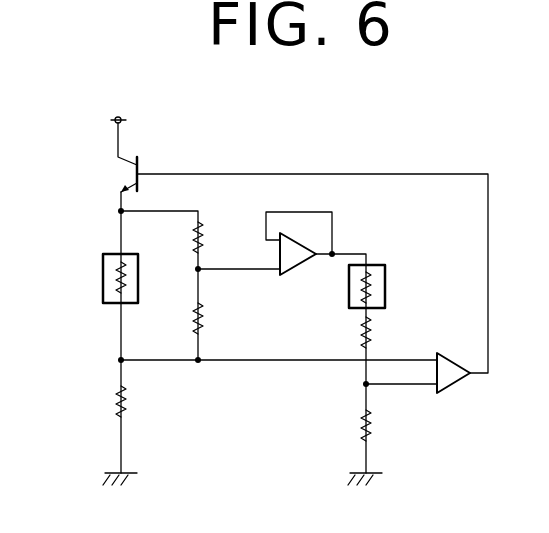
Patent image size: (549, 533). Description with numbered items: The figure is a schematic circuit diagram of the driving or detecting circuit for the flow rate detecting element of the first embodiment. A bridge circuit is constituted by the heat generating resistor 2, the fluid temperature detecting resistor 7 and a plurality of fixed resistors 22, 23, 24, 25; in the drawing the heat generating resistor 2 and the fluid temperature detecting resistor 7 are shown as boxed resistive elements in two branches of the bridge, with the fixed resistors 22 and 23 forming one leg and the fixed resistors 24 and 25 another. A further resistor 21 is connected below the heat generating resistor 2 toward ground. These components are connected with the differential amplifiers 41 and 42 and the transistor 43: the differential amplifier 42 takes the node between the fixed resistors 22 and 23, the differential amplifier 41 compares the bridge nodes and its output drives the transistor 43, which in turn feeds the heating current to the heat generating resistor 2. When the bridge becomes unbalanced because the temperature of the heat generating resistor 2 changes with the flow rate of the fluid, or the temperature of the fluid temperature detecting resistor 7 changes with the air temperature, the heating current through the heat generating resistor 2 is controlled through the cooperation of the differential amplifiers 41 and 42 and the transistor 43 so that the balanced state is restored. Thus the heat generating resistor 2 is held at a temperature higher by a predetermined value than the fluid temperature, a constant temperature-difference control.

The heat generating resistor 2 is at (102, 280).
The fluid temperature detecting resistor 7 is at (389, 270).
The resistor 21 is at (120, 403).
The fixed resistor 22 is at (202, 228).
The fixed resistor 23 is at (204, 319).
The fixed resistor 24 is at (369, 332).
The fixed resistor 25 is at (370, 431).
The differential amplifier 41 is at (453, 378).
The differential amplifier 42 is at (287, 259).
The transistor 43 is at (140, 161).